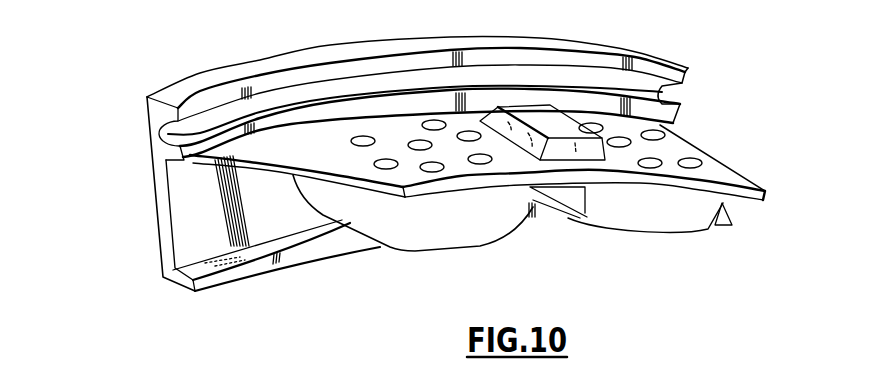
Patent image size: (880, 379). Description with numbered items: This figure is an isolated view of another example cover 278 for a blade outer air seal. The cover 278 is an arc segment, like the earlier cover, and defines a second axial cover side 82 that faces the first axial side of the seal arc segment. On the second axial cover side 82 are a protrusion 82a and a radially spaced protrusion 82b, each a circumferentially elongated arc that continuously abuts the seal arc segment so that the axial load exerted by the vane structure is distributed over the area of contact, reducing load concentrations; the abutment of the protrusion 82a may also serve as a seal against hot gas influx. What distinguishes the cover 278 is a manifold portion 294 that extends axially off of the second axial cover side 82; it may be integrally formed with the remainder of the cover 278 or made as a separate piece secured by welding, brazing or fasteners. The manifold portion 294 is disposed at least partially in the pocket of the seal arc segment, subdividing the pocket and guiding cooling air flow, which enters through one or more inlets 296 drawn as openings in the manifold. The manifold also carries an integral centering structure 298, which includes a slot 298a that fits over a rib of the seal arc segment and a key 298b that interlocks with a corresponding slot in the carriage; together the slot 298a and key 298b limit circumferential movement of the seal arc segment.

The cover 278 is at (141, 88).
The second axial cover side 82 is at (193, 216).
The protrusion 82a is at (190, 289).
The protrusion 82b is at (198, 165).
The manifold portion 294 is at (424, 238).
The inlets 296 is at (481, 165).
The centering structure 298 is at (520, 103).
The slot 298a is at (571, 238).
The key 298b is at (541, 118).